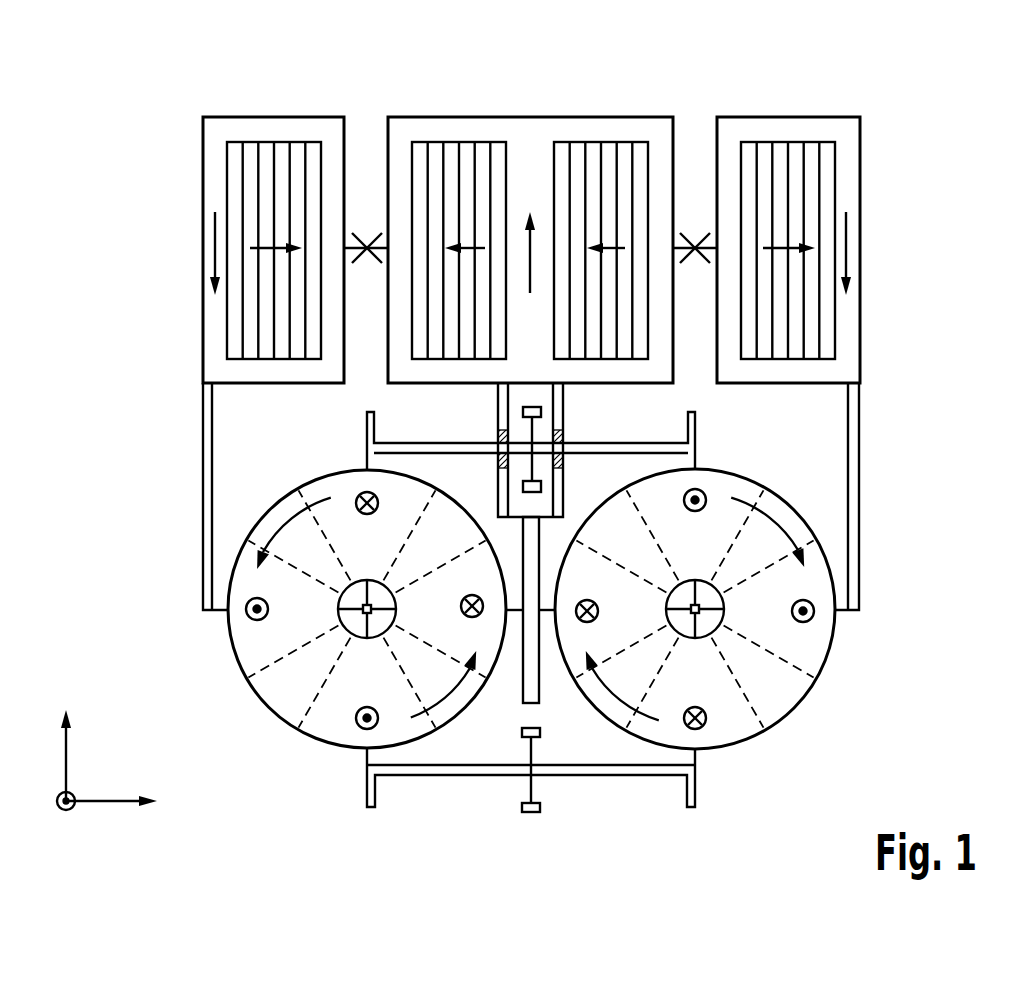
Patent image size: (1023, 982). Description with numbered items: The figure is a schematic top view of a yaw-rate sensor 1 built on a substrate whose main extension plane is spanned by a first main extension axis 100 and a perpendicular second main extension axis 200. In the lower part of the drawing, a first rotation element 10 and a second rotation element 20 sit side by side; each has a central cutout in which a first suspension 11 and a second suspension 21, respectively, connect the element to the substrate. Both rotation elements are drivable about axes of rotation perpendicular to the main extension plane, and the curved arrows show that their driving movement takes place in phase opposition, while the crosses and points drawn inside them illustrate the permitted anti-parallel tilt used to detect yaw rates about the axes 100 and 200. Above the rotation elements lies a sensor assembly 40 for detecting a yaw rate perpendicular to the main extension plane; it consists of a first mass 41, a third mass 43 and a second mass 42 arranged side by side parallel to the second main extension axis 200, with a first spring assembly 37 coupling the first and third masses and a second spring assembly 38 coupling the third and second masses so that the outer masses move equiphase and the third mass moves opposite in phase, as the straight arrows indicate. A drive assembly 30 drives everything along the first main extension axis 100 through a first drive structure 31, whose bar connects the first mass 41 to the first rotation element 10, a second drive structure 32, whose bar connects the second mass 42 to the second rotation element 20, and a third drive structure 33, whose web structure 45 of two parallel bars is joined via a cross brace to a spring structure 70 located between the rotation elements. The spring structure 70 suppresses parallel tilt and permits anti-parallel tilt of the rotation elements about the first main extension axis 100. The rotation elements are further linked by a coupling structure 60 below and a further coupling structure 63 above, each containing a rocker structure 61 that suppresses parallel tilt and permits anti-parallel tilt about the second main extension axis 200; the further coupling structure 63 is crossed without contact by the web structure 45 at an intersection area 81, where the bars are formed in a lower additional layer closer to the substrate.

The yaw-rate sensor 1 is at (104, 92).
The first rotation element 10 is at (252, 582).
The first suspension 11 is at (355, 634).
The second rotation element 20 is at (800, 628).
The second suspension 21 is at (697, 625).
The drive assembly 30 is at (905, 425).
The first drive structure 31 is at (208, 492).
The second drive structure 32 is at (850, 513).
The third drive structure 33 is at (558, 413).
The first spring assembly 37 is at (367, 233).
The second spring assembly 38 is at (695, 233).
The sensor assembly 40 is at (905, 141).
The first mass 41 is at (215, 312).
The second mass 42 is at (850, 188).
The third mass 43 is at (453, 128).
The web structure 45 is at (503, 418).
The coupling structure 60 is at (428, 775).
The rocker structure 61 is at (532, 778).
The further coupling structure 63 is at (663, 450).
The spring structure 70 is at (540, 677).
The intersection area 81 is at (562, 460).
The first main extension axis 100 is at (63, 743).
The second main extension axis 200 is at (135, 802).